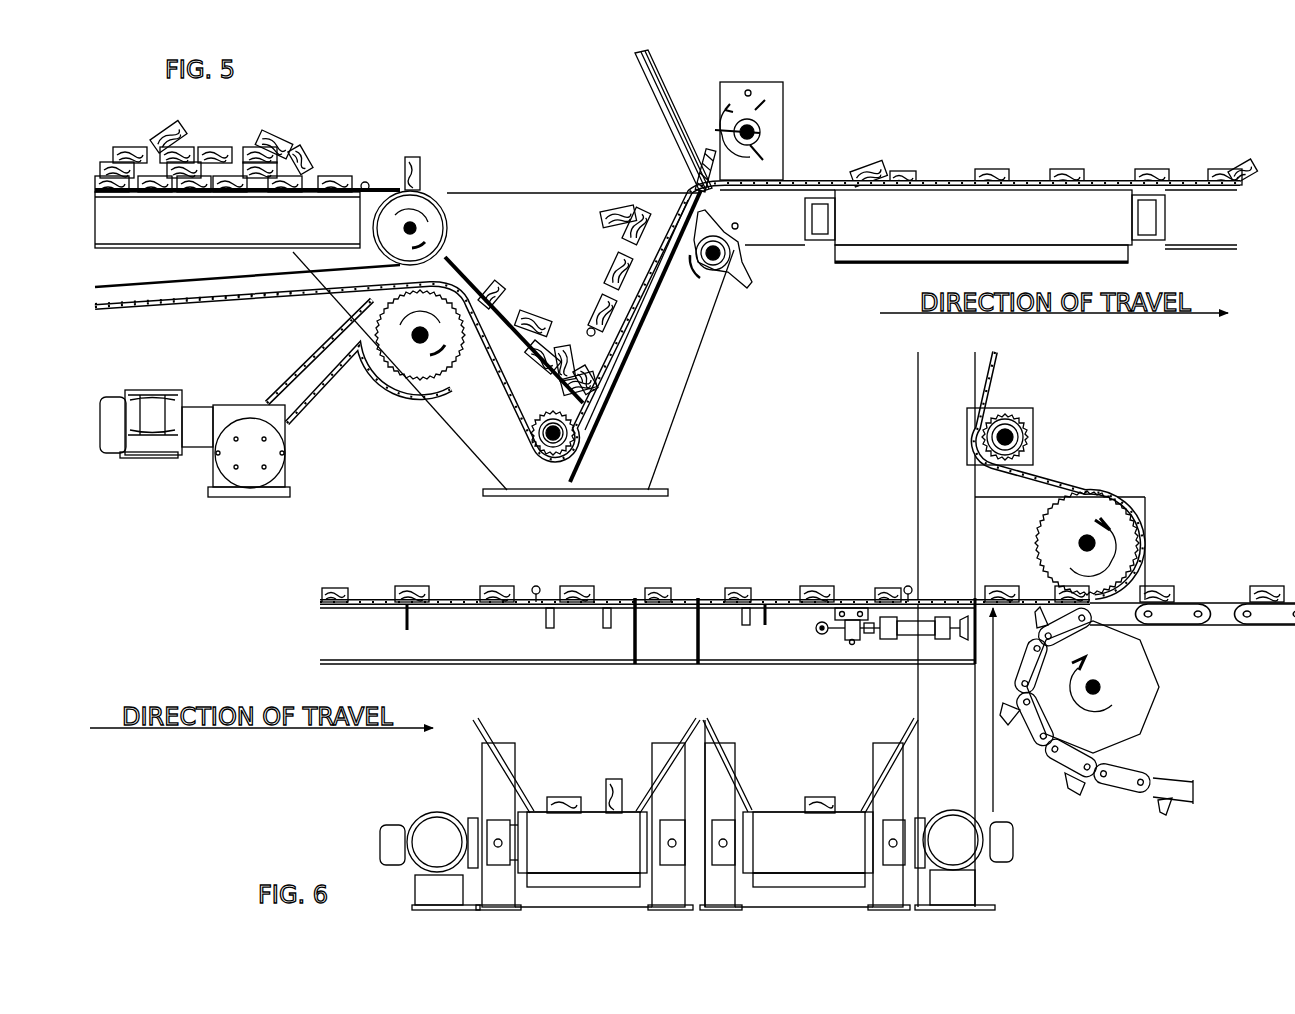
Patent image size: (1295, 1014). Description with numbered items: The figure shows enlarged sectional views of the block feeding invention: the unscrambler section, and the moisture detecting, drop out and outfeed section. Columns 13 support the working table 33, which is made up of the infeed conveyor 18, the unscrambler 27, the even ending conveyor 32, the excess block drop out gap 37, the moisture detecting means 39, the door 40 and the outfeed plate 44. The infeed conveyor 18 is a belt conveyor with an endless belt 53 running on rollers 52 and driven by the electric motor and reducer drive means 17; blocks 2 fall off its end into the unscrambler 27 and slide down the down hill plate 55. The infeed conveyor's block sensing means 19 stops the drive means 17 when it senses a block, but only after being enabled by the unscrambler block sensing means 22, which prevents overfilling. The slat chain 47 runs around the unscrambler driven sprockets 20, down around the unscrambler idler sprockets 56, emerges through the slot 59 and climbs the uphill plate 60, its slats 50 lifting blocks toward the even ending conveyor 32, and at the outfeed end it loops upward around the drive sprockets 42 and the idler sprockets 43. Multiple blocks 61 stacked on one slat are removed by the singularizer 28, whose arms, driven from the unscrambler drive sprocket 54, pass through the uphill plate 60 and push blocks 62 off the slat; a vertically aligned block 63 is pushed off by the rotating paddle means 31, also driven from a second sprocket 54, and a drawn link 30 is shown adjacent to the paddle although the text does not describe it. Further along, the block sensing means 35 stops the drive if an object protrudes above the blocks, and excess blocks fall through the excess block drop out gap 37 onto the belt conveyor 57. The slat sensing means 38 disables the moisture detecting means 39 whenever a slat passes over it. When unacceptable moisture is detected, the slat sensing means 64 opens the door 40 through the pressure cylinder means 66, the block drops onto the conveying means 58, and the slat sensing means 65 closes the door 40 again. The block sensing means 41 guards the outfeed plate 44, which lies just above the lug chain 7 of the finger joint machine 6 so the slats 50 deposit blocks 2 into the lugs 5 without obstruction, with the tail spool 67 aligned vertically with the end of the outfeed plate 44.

In FIG. 5, the blocks 2 is at (148, 126).
In FIG. 6, the blocks 2 is at (414, 590).
In FIG. 6, the lugs 5 is at (1156, 818).
In FIG. 6, the finger joint machine 6 is at (1222, 705).
In FIG. 6, the lug chain 7 is at (1155, 773).
In FIG. 6, the columns 13 is at (930, 502).
In FIG. 5, the electric motor and reducer drive means 17 is at (235, 464).
In FIG. 5, the infeed conveyor 18 is at (218, 234).
In FIG. 5, the infeed conveyor's block sensing means 19 is at (370, 182).
In FIG. 5, the unscrambler driven sprockets 20 is at (378, 393).
In FIG. 5, the unscrambler block sensing means 22 is at (585, 326).
In FIG. 5, the unscrambler 27 is at (505, 234).
In FIG. 5, the singularizer 28 is at (752, 293).
In FIG. 5, the actuator link 30 is at (708, 150).
In FIG. 5, the rotating paddle means 31 is at (768, 122).
In FIG. 5, the even ending conveyor 32 is at (960, 230).
In FIG. 5, the working table 33 is at (1190, 230).
In FIG. 6, the working table 33 is at (328, 648).
In FIG. 6, the block sensing means 35 is at (531, 584).
In FIG. 6, the excess block drop out gap 37 is at (647, 645).
In FIG. 6, the slat sensing means 38 is at (742, 620).
In FIG. 6, the moisture detecting means 39 is at (733, 705).
In FIG. 6, the door 40 is at (800, 612).
In FIG. 6, the block sensing means 41 is at (903, 584).
In FIG. 6, the drive sprockets 42 is at (1047, 557).
In FIG. 6, the idler sprockets 43 is at (1022, 430).
In FIG. 6, the outfeed plate 44 is at (993, 812).
In FIG. 5, the slat chain 47 is at (173, 309).
In FIG. 6, the slat chain 47 is at (1000, 376).
In FIG. 5, the slat 50 is at (222, 305).
In FIG. 6, the slat 50 is at (640, 594).
In FIG. 5, the rollers 52 is at (430, 193).
In FIG. 5, the endless belt 53 is at (178, 283).
In FIG. 5, the unscrambler drive sprocket 54 is at (405, 370).
In FIG. 5, the down hill plate 55 is at (545, 378).
In FIG. 5, the unscrambler idler sprockets 56 is at (540, 442).
In FIG. 6, the belt conveyor 57 is at (572, 855).
In FIG. 6, the conveying means 58 is at (797, 855).
In FIG. 5, the slot 59 is at (598, 427).
In FIG. 5, the uphill plate 60 is at (628, 377).
In FIG. 5, the multiple blocks 61 is at (640, 276).
In FIG. 5, the blocks 62 is at (650, 207).
In FIG. 5, the vertically aligned block 63 is at (652, 97).
In FIG. 6, the slat sensing means 64 is at (546, 630).
In FIG. 6, the slat sensing means 65 is at (602, 632).
In FIG. 6, the pressure cylinder means 66 is at (918, 640).
In FIG. 6, the tail spool 67 is at (1114, 695).